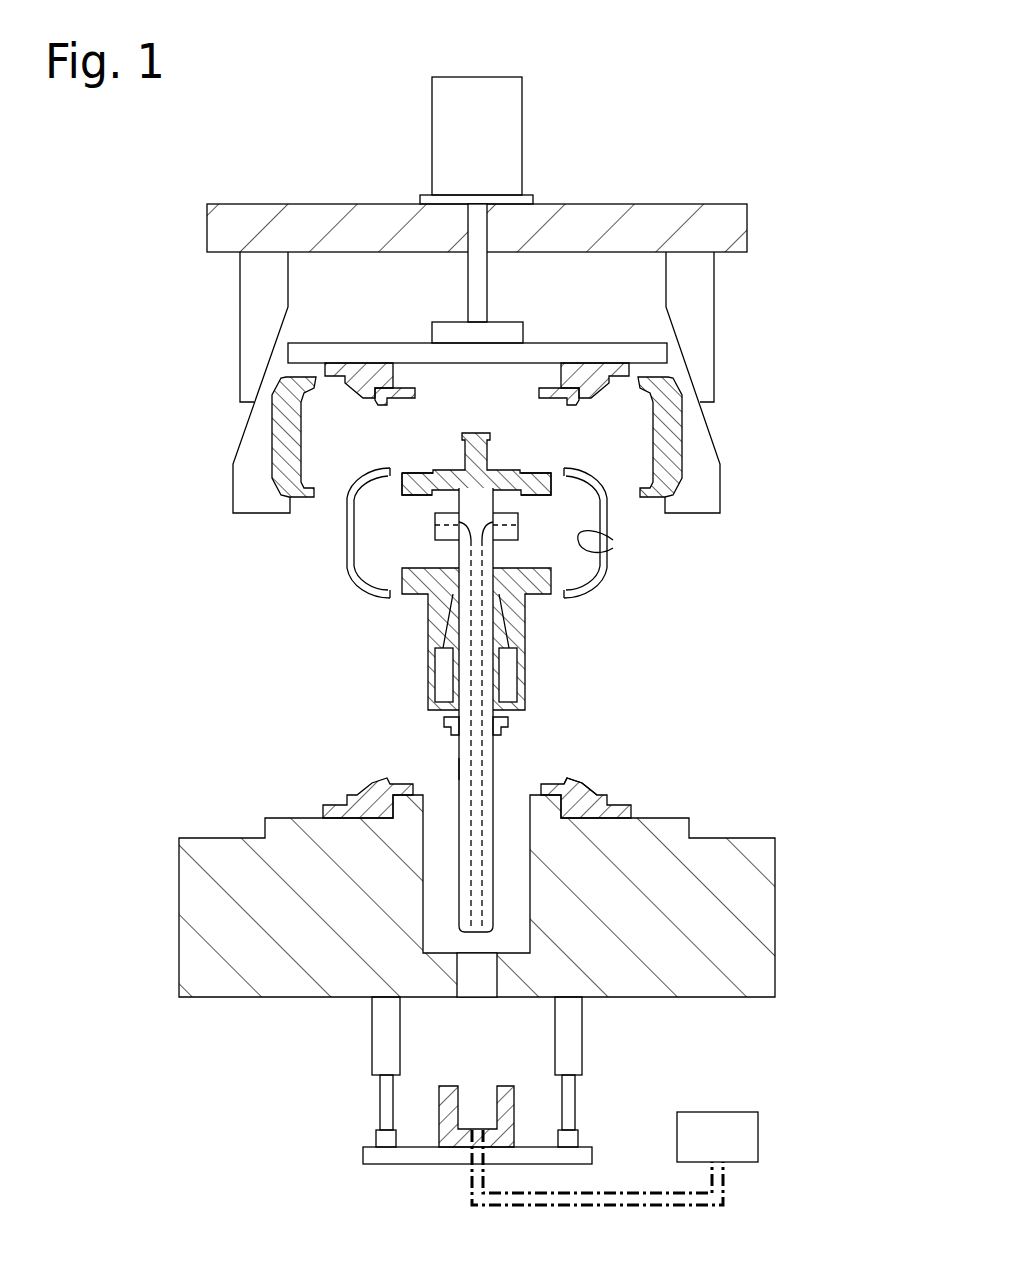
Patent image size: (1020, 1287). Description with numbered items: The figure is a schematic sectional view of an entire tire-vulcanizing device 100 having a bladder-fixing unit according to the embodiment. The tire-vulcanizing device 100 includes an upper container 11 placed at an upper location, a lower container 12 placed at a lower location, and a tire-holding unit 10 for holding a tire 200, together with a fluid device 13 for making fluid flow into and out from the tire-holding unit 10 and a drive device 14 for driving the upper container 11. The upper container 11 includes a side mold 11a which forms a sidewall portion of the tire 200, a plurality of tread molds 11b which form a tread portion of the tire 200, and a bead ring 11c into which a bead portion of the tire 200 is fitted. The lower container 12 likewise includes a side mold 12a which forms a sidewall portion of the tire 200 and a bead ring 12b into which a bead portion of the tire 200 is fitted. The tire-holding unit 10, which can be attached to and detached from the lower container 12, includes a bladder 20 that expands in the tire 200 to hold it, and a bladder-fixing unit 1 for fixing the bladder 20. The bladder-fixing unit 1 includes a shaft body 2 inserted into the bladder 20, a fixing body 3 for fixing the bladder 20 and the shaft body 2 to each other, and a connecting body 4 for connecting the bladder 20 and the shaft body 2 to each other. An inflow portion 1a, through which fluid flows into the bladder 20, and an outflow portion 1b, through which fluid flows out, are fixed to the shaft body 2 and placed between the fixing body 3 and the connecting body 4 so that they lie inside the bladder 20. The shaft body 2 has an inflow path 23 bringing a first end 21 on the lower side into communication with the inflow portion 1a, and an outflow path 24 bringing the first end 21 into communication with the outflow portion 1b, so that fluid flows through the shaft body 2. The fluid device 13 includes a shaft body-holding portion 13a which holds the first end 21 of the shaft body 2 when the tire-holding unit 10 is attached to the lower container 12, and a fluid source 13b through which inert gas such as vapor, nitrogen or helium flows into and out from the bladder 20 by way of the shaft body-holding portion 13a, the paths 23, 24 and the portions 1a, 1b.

The tire-vulcanizing device 100 is at (783, 107).
The drive device 14 is at (406, 141).
The upper container 11 is at (200, 344).
The side mold 11a is at (395, 370).
The tread molds 11b is at (297, 506).
The bead ring 11c is at (415, 392).
The tire-holding unit 10 is at (651, 670).
The tire 200 is at (340, 590).
The bladder 20 is at (613, 551).
The bladder-fixing unit 1 is at (571, 643).
The inflow portion 1a is at (505, 512).
The outflow portion 1b is at (447, 512).
The fixing body 3 is at (548, 472).
The connecting body 4 is at (408, 650).
The shaft body 2 is at (508, 758).
The inflow path 23 is at (480, 737).
The outflow path 24 is at (458, 768).
The lower container 12 is at (174, 801).
The side mold 12a is at (612, 797).
The bead ring 12b is at (585, 781).
The first end 21 is at (485, 994).
The fluid device 13 is at (713, 1063).
The shaft body-holding portion 13a is at (515, 1110).
The fluid source 13b is at (760, 1137).